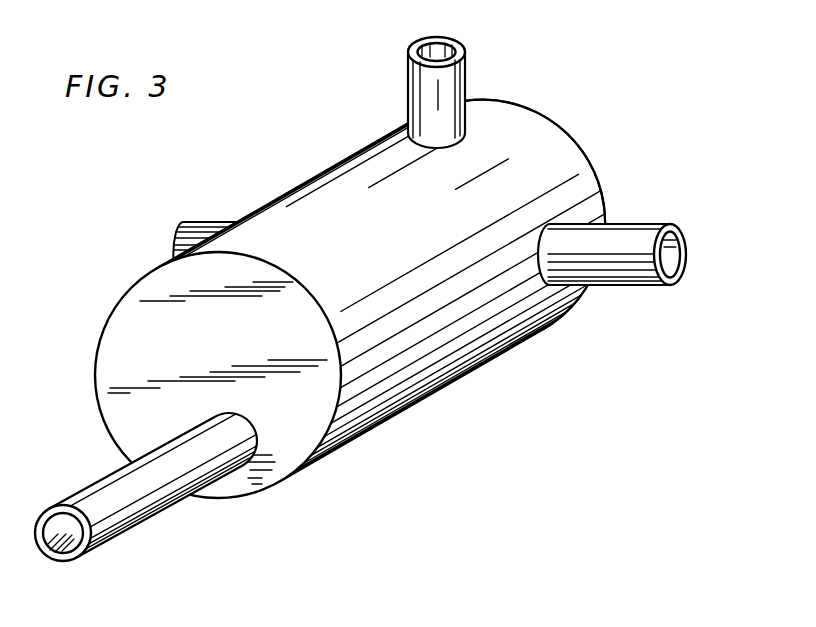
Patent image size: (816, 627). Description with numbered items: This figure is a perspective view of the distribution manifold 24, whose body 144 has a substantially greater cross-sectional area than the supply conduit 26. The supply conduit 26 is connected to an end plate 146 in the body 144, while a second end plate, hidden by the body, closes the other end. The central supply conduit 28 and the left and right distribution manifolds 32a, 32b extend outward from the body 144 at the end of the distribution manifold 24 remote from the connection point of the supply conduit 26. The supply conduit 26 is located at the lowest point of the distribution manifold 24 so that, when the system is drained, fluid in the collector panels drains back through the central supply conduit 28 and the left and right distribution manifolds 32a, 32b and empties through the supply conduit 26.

The distribution manifold 24 is at (466, 392).
The supply conduit 26 is at (100, 497).
The central supply conduit 28 is at (462, 78).
The left distribution manifold 32a is at (176, 224).
The right distribution manifold 32b is at (642, 233).
The body 144 is at (550, 135).
The end plate 146 is at (120, 374).